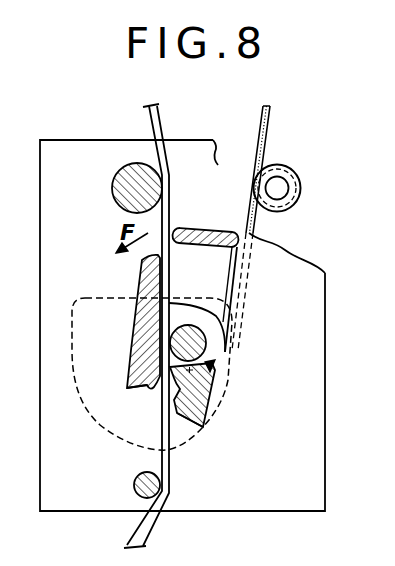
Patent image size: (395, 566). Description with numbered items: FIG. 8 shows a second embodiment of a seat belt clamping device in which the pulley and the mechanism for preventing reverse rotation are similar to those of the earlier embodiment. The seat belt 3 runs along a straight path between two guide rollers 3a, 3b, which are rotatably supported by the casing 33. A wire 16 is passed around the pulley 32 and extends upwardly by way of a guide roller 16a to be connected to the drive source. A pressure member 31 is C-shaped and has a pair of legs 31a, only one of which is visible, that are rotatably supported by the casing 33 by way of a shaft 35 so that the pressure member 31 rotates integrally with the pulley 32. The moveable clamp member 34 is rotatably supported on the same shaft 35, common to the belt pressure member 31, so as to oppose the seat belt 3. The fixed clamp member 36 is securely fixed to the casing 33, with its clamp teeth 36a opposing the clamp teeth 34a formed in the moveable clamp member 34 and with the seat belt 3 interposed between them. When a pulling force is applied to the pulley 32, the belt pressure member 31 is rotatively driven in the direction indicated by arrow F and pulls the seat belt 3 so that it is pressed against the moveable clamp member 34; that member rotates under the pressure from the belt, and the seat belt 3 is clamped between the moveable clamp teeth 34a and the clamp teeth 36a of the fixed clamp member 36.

The seat belt 3 is at (158, 134).
The guide roller 3a is at (112, 184).
The guide roller 3b is at (134, 484).
The wire 16 is at (267, 133).
The guide roller 16a is at (309, 172).
The pressure member 31 is at (187, 227).
The legs 31a is at (230, 278).
The pulley 32 is at (229, 398).
The casing 33 is at (325, 353).
The moveable clamp member 34 is at (139, 283).
The clamp teeth 34a is at (148, 391).
The shaft 35 is at (207, 350).
The fixed clamp member 36 is at (206, 416).
The clamp teeth 36a is at (181, 423).